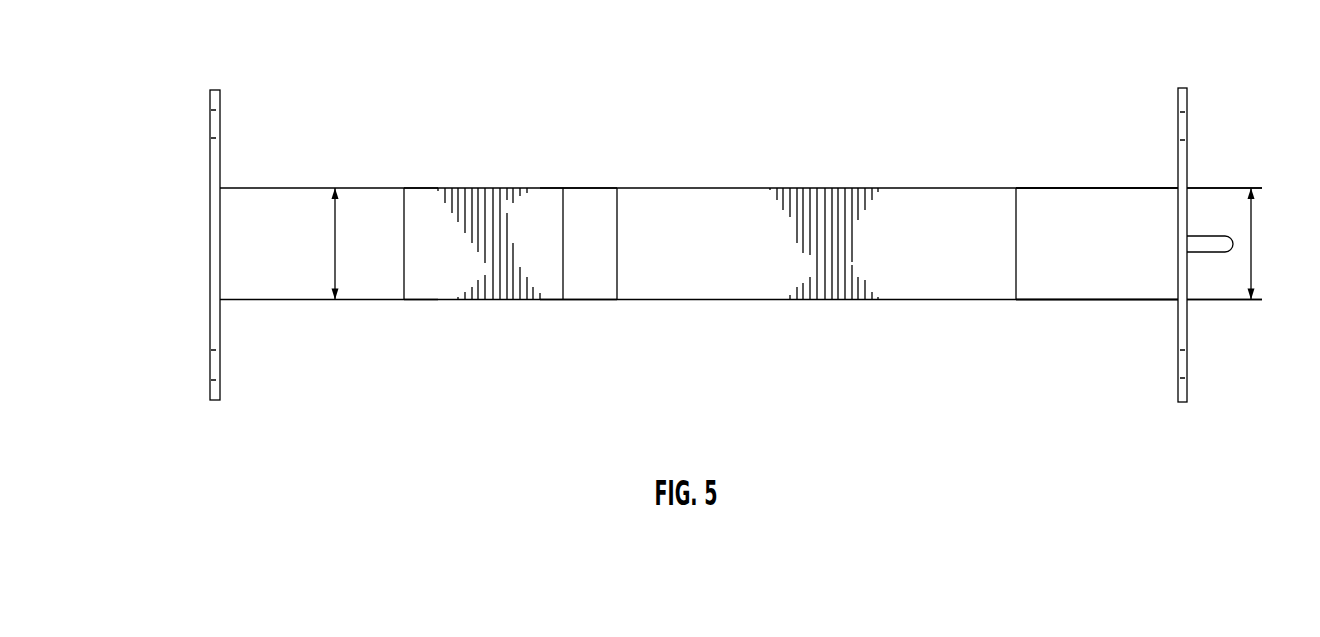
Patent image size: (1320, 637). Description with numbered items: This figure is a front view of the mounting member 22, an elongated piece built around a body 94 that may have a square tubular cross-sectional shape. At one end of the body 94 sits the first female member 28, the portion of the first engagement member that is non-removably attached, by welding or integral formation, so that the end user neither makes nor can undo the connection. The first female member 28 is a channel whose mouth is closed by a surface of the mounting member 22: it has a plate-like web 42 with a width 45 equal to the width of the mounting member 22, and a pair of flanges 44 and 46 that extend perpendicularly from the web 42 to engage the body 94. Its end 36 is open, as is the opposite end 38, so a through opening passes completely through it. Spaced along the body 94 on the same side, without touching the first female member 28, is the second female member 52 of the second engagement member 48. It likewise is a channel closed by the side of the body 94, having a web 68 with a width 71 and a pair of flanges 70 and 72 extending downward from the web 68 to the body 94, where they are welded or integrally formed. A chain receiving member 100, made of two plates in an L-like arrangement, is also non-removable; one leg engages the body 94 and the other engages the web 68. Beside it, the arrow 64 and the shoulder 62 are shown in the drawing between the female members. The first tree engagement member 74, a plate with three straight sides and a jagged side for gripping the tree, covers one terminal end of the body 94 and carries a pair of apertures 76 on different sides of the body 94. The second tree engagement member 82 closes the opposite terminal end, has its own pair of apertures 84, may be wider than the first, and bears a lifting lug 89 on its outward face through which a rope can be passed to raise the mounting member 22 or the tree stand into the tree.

The mounting member 22 is at (694, 340).
The first female member 28 is at (1025, 231).
The end 36 is at (1015, 268).
The opposite end 38 is at (1188, 212).
The web 42 is at (1102, 250).
The flange 44 is at (1078, 300).
The width 45 is at (1252, 255).
The flange 46 is at (1075, 188).
The second engagement member 48 is at (567, 174).
The second female member 52 is at (537, 197).
The shoulder 62 is at (404, 256).
The direction arrow 64 is at (576, 254).
The web 68 is at (437, 213).
The flange 70 is at (485, 300).
The width 71 is at (335, 242).
The flange 72 is at (490, 188).
The first tree engagement member 74 is at (210, 99).
The apertures 76 is at (210, 120).
The second tree engagement member 82 is at (1182, 87).
The apertures 84 is at (1190, 128).
The lifting lug 89 is at (1207, 253).
The body 94 is at (902, 283).
The chain receiving member 100 is at (605, 205).